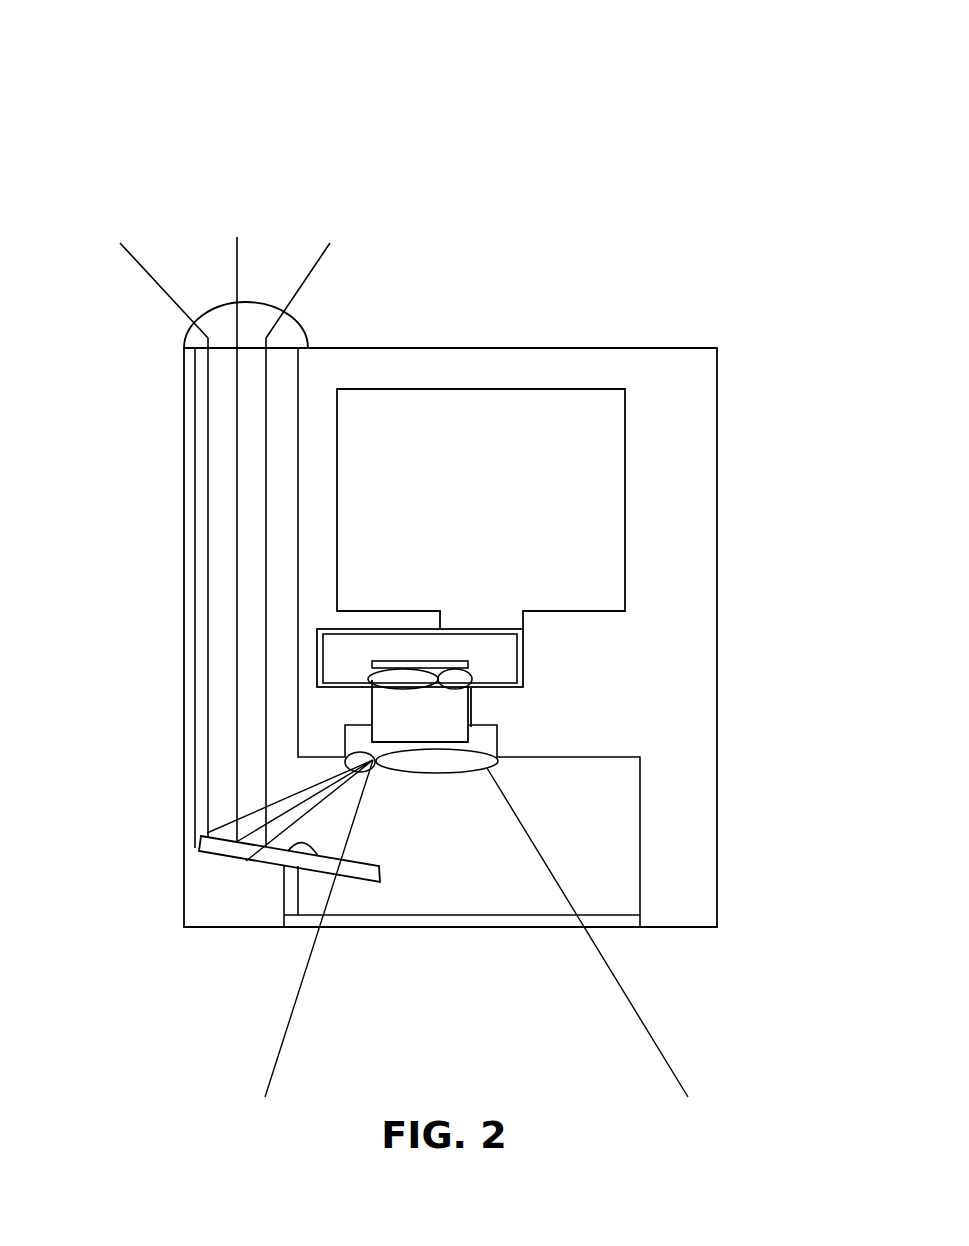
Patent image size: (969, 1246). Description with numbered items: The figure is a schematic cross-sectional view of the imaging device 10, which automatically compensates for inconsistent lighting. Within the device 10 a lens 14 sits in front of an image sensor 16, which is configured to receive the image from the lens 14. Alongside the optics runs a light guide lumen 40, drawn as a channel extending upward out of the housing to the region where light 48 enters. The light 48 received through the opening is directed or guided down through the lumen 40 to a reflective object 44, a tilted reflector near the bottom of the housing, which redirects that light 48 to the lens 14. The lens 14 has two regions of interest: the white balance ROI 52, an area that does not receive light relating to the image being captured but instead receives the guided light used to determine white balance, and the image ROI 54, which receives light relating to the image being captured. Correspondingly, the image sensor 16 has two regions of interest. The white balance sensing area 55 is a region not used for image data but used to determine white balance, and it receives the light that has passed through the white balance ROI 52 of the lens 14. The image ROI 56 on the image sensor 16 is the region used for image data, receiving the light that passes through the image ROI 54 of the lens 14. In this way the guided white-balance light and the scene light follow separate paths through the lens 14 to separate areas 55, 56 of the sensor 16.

The imaging device 10 is at (68, 92).
The lens 14 is at (478, 738).
The image sensor 16 is at (452, 660).
The light guide lumen 40 is at (203, 627).
The reflective object 44 is at (246, 861).
The light 48 is at (313, 267).
The white balance ROI 52 is at (347, 763).
The image ROI 54 is at (443, 773).
The white balance sensing area 55 is at (472, 678).
The image ROI 56 is at (370, 679).